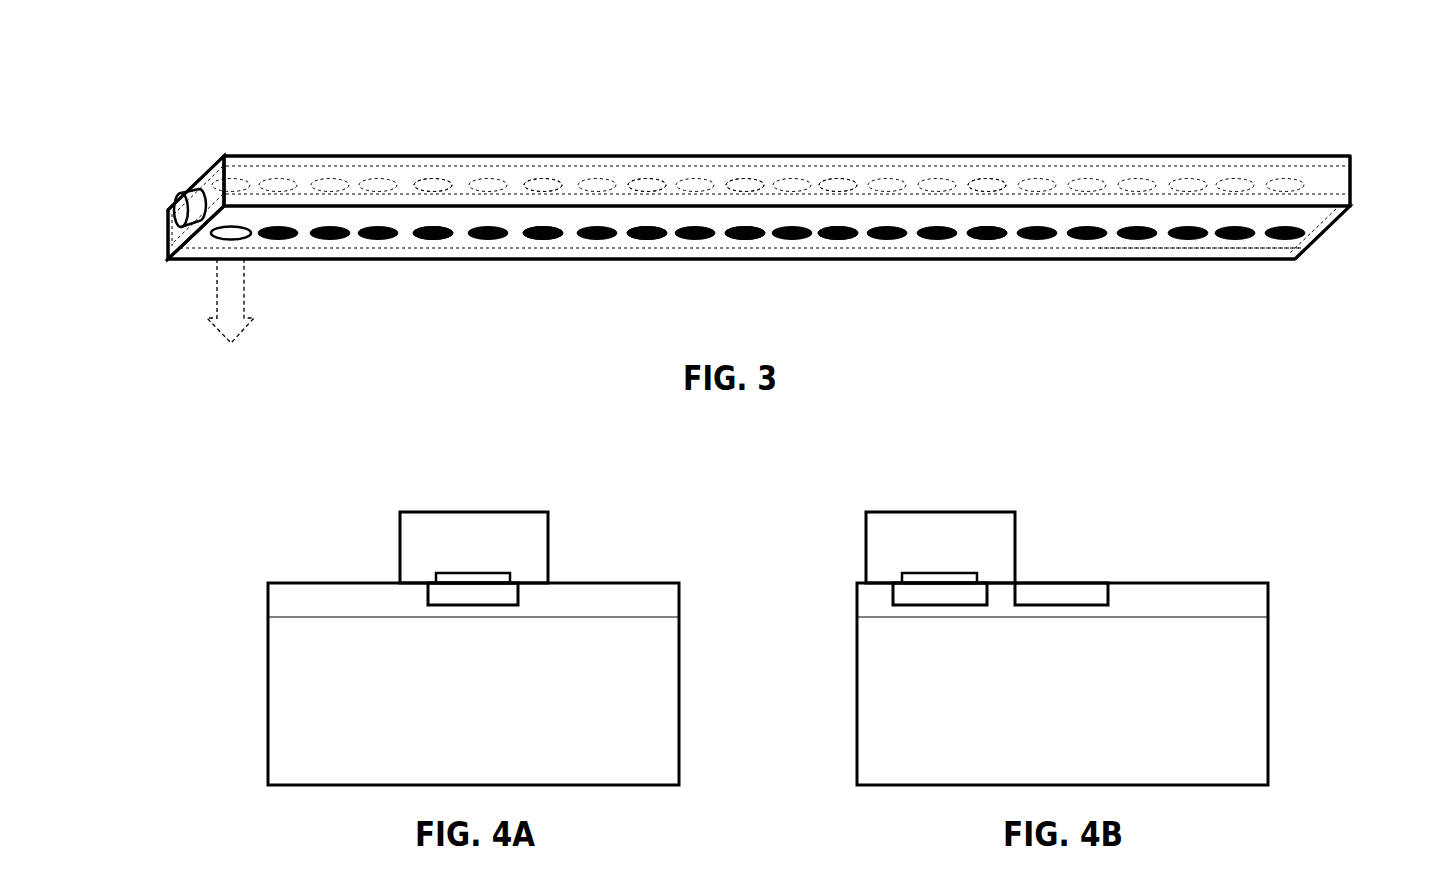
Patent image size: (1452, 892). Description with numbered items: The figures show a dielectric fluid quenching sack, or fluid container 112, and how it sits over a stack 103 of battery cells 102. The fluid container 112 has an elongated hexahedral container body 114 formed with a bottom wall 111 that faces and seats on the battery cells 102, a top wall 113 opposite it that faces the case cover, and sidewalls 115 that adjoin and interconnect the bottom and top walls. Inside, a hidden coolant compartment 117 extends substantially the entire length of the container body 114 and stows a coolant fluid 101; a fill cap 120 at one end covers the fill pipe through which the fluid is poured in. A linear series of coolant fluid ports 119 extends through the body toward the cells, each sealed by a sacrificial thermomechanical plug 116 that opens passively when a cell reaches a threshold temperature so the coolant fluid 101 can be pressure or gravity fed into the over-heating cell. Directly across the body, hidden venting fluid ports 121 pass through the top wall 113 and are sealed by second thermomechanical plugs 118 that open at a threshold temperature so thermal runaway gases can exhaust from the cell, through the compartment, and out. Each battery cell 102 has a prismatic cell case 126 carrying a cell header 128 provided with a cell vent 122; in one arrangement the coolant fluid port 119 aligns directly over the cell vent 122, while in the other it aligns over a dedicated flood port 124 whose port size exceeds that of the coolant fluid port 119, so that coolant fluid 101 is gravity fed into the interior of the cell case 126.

In FIG. 3, the coolant fluid 101 is at (215, 300).
In FIG. 4A, the battery cell 102 is at (278, 580).
In FIG. 4A, the stack of battery cells 103 is at (307, 543).
In FIG. 4B, the stack of battery cells 103 is at (852, 556).
In FIG. 3, the bottom wall 111 is at (1313, 260).
In FIG. 3, the fluid container 112 is at (242, 70).
In FIG. 4A, the fluid container 112 is at (415, 500).
In FIG. 4B, the fluid container 112 is at (877, 500).
In FIG. 3, the top wall 113 is at (1315, 154).
In FIG. 3, the container body 114 is at (200, 188).
In FIG. 3, the sidewall 115 is at (185, 243).
In FIG. 3, the thermomechanical plug 116 is at (440, 235).
In FIG. 3, the coolant compartment 117 is at (1208, 260).
In FIG. 3, the thermomechanical plug 118 is at (442, 183).
In FIG. 3, the coolant fluid port 119 is at (418, 238).
In FIG. 4A, the coolant fluid port 119 is at (482, 575).
In FIG. 4B, the coolant fluid port 119 is at (948, 575).
In FIG. 3, the fill cap 120 is at (174, 213).
In FIG. 3, the venting fluid port 121 is at (414, 183).
In FIG. 4A, the cell vent 122 is at (508, 592).
In FIG. 4B, the cell vent 122 is at (1098, 592).
In FIG. 4B, the flood port 124 is at (975, 592).
In FIG. 4A, the cell case 126 is at (266, 662).
In FIG. 4A, the cell header 128 is at (266, 597).